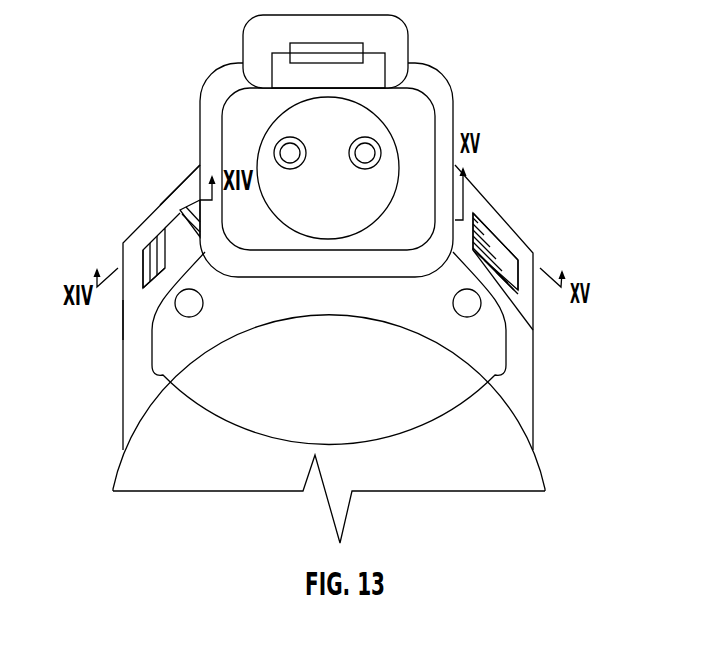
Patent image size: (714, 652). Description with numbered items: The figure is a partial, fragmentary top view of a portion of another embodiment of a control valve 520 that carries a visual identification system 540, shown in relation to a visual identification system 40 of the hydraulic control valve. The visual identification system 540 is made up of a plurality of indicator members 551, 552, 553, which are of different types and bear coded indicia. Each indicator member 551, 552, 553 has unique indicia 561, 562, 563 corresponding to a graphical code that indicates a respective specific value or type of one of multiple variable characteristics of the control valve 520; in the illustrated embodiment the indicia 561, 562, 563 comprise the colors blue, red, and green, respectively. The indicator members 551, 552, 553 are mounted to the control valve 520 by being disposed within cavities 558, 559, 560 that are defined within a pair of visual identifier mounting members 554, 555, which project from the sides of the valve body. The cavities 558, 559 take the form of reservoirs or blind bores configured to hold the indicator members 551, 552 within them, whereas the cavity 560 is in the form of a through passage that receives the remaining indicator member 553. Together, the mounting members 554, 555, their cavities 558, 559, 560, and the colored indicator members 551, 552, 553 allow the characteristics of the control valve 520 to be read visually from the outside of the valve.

The visual identification system 40 is at (187, 470).
The control valve 520 is at (133, 63).
The visual identification system 540 is at (90, 224).
The indicator member 551 is at (507, 257).
The indicator member 552 is at (143, 250).
The indicator member 553 is at (192, 205).
The visual identifier mounting member 554 is at (505, 228).
The visual identifier mounting member 555 is at (165, 220).
The cavity 558 is at (520, 302).
The cavity 559 is at (143, 286).
The cavity 560 is at (143, 240).
The indicia 561 is at (480, 225).
The indicia 562 is at (143, 292).
The indicia 563 is at (182, 220).